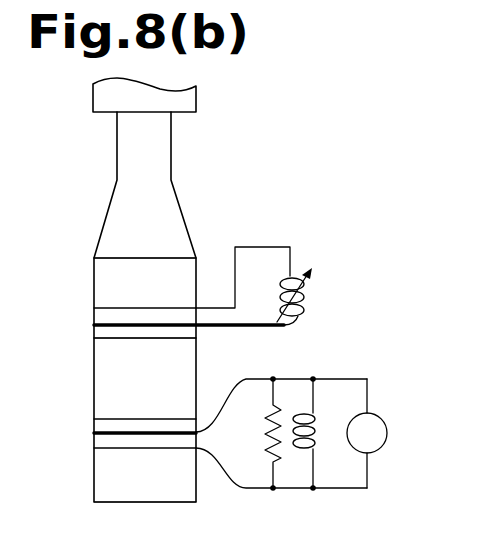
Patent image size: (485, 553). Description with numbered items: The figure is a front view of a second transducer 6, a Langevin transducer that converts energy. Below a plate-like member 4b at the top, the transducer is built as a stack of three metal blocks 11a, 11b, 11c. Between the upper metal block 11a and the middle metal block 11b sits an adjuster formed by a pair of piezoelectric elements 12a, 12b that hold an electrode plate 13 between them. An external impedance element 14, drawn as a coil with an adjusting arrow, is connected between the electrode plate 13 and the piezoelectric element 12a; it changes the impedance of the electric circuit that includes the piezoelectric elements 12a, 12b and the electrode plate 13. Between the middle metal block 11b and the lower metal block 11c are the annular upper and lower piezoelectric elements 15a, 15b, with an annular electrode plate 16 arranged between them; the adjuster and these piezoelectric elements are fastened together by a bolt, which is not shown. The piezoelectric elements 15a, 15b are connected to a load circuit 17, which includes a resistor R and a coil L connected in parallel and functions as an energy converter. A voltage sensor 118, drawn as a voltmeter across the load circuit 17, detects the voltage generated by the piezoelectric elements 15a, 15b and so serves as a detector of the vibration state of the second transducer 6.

The glass substrate / top plate 4b is at (197, 100).
The second transducer 6 is at (73, 247).
The metal block 11a is at (196, 276).
The metal block 11b is at (100, 372).
The metal block 11c is at (100, 490).
The piezoelectric element 12a is at (97, 313).
The piezoelectric element 12b is at (197, 338).
The electrode plate 13 is at (94, 325).
The external impedance element 14 is at (305, 300).
The upper piezoelectric element 15a is at (98, 419).
The lower piezoelectric element 15b is at (97, 448).
The electrode plate 16 is at (95, 433).
The load circuit 17 is at (299, 434).
The voltage sensor 118 is at (375, 413).
The resistor R is at (265, 437).
The coil L is at (321, 408).